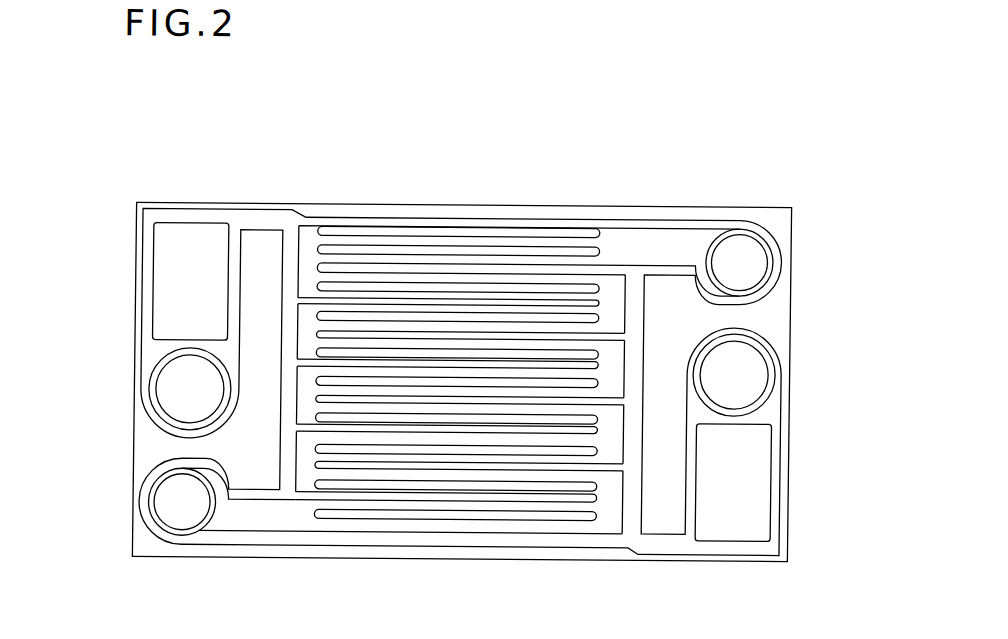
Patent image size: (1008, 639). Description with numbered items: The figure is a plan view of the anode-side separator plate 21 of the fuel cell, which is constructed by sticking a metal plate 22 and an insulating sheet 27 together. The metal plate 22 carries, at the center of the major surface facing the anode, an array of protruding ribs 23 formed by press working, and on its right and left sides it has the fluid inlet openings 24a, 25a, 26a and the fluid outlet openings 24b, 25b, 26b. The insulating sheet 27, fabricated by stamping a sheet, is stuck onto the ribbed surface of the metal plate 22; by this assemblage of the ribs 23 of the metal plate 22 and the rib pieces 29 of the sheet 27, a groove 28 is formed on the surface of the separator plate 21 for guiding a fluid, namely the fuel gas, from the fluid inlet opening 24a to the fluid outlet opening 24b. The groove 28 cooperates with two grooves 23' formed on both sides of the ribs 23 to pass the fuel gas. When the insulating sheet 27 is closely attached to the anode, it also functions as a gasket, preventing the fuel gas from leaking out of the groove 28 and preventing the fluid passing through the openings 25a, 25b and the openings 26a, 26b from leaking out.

The anode-side separator plate 21 is at (474, 199).
The metal plate 22 is at (766, 206).
The protruding ribs 23 is at (462, 256).
The grooves 23' is at (460, 388).
The fluid inlet opening 24a is at (746, 265).
The fluid outlet opening 24b is at (182, 510).
The fluid inlet opening 25a is at (746, 380).
The fluid outlet opening 25b is at (186, 388).
The fluid inlet opening 26a is at (735, 485).
The fluid outlet opening 26b is at (176, 297).
The insulating sheet 27 is at (290, 209).
The groove 28 is at (613, 245).
The rib pieces 29 is at (305, 500).